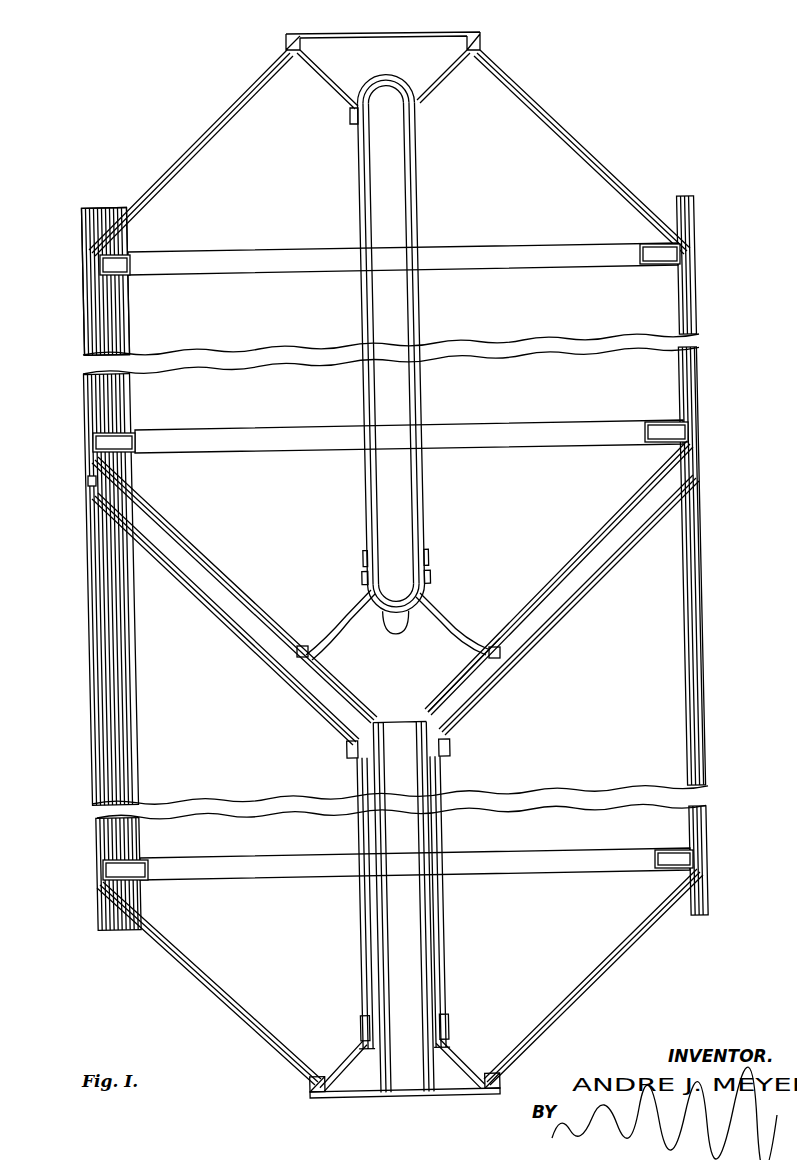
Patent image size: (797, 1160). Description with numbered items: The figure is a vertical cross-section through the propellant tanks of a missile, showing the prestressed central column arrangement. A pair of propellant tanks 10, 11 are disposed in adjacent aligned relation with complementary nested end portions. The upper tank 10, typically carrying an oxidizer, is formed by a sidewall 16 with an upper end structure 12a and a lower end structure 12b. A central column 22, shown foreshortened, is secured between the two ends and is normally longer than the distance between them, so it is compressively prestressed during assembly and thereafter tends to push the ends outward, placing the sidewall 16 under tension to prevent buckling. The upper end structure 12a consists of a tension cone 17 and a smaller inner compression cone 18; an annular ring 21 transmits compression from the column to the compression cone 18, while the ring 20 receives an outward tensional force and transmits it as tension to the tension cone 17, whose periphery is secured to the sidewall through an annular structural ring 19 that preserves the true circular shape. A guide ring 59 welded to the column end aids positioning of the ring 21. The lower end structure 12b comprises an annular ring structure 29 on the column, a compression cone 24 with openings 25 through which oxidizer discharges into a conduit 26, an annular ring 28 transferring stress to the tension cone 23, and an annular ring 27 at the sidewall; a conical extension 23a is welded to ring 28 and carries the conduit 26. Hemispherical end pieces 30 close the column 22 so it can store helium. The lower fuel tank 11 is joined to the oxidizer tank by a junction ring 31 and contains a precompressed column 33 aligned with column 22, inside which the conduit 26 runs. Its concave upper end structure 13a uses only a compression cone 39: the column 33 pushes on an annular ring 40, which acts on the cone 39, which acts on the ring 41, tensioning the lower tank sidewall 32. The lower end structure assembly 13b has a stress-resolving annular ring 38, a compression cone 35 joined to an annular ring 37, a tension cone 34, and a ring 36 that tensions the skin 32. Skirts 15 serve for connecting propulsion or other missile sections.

The upper propellant tank 10 is at (83, 325).
The lower fuel tank 11 is at (90, 680).
The upper end structure 12a is at (207, 128).
The lower end structure 12b is at (584, 554).
The upper end structure of lower tank 13a is at (306, 698).
The lower tank end structure assembly 13b is at (229, 999).
The skirt 15 is at (83, 235).
The sidewall 16 is at (697, 320).
The tension cone 17 is at (537, 96).
The compression cone 18 is at (447, 76).
The annular structural ring 19 is at (688, 258).
The ring 20 is at (478, 33).
The annular ring 21 is at (357, 118).
The central column 22 is at (417, 290).
The tension cone 23 is at (672, 490).
The conical extension 23a is at (461, 682).
The compression cone 24 is at (436, 598).
The openings 25 is at (441, 616).
The conduit 26 is at (432, 781).
The annular ring 27 is at (688, 424).
The annular ring 28 is at (501, 652).
The annular ring structure 29 is at (361, 585).
The hemispherical end pieces 30 is at (371, 83).
The junction ring 31 is at (88, 455).
The lower tank sidewall 32 is at (705, 720).
The precompressed column 33 is at (446, 940).
The tension cone 34 is at (621, 952).
The compression cone 35 is at (477, 1078).
The stress resolving annular ring 36 is at (118, 858).
The annular ring 37 is at (314, 1093).
The stress-resolving annular ring 38 is at (359, 1030).
The compression cone 39 is at (244, 634).
The annular ring 40 is at (447, 751).
The ring 41 is at (89, 483).
The guide ring 59 is at (364, 557).